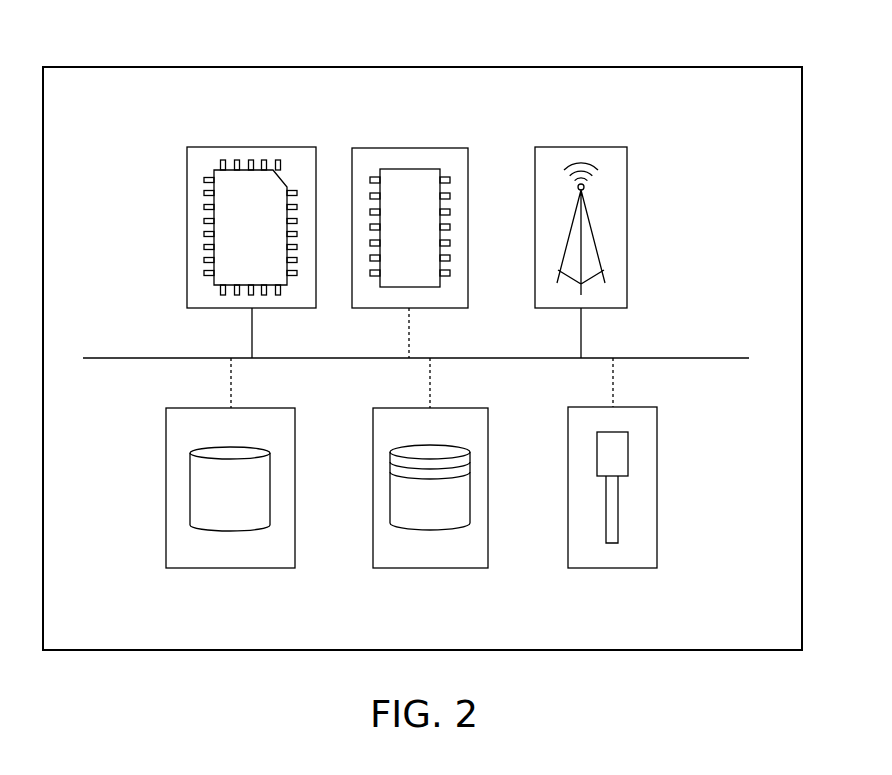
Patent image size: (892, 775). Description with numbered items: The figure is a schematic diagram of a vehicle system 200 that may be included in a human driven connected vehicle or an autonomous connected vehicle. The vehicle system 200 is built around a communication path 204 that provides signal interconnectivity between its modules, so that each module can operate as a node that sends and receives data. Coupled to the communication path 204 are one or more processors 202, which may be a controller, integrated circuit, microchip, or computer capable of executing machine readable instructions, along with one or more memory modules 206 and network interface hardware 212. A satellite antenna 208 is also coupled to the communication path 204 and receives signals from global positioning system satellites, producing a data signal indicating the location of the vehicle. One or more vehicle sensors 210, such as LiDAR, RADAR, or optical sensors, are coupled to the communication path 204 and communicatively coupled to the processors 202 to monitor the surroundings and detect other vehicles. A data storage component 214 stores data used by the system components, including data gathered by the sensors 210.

The vehicle system 200 is at (113, 67).
The processor 202 is at (252, 147).
The communication path 204 is at (702, 358).
The memory module 206 is at (409, 148).
The satellite antenna 208 is at (611, 568).
The vehicle sensor 210 is at (230, 568).
The network interface hardware 212 is at (581, 147).
The data storage component 214 is at (430, 568).